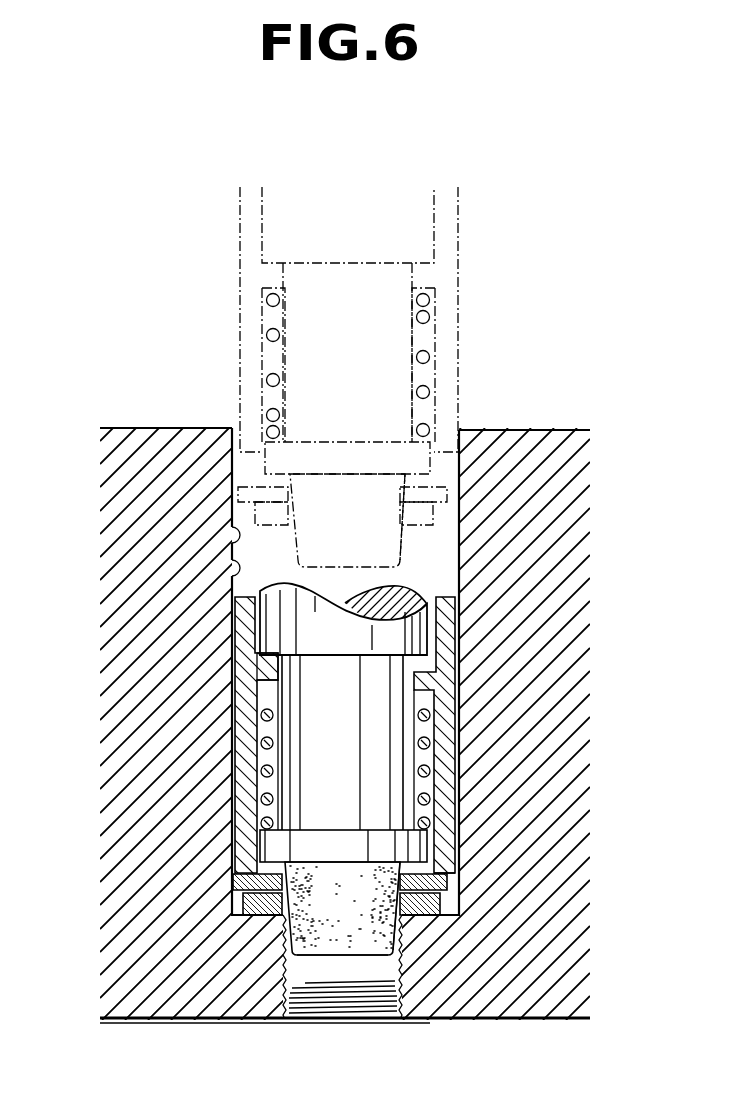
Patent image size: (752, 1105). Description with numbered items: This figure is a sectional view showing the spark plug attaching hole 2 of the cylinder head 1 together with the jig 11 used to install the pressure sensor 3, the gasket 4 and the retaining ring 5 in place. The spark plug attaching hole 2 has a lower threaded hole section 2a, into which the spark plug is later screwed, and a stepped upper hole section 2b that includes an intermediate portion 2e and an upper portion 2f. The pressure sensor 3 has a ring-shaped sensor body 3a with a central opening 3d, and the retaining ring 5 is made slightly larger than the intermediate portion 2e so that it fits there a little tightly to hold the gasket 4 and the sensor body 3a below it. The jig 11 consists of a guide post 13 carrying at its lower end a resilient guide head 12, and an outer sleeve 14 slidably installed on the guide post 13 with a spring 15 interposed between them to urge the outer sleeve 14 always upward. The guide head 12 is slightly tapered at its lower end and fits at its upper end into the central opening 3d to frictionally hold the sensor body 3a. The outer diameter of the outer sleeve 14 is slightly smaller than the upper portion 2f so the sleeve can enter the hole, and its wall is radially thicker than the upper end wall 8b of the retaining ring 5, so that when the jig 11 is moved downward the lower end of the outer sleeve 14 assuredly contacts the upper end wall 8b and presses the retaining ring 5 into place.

The cylinder head 1 is at (552, 440).
The spark plug attaching hole 2 is at (236, 432).
The lower threaded hole section 2a is at (402, 957).
The upper hole section 2b is at (232, 529).
The intermediate portion 2e is at (238, 886).
The upper portion 2f is at (232, 567).
The pressure sensor 3 is at (445, 519).
The sensor body 3a is at (245, 906).
The central opening 3d is at (292, 940).
The gasket 4 is at (450, 495).
The retaining ring 5 is at (242, 492).
The upper end wall 8b is at (455, 868).
The jig 11 is at (232, 247).
The guide head 12 is at (440, 567).
The guide post 13 is at (370, 230).
The outer sleeve 14 is at (462, 266).
The spring 15 is at (428, 357).